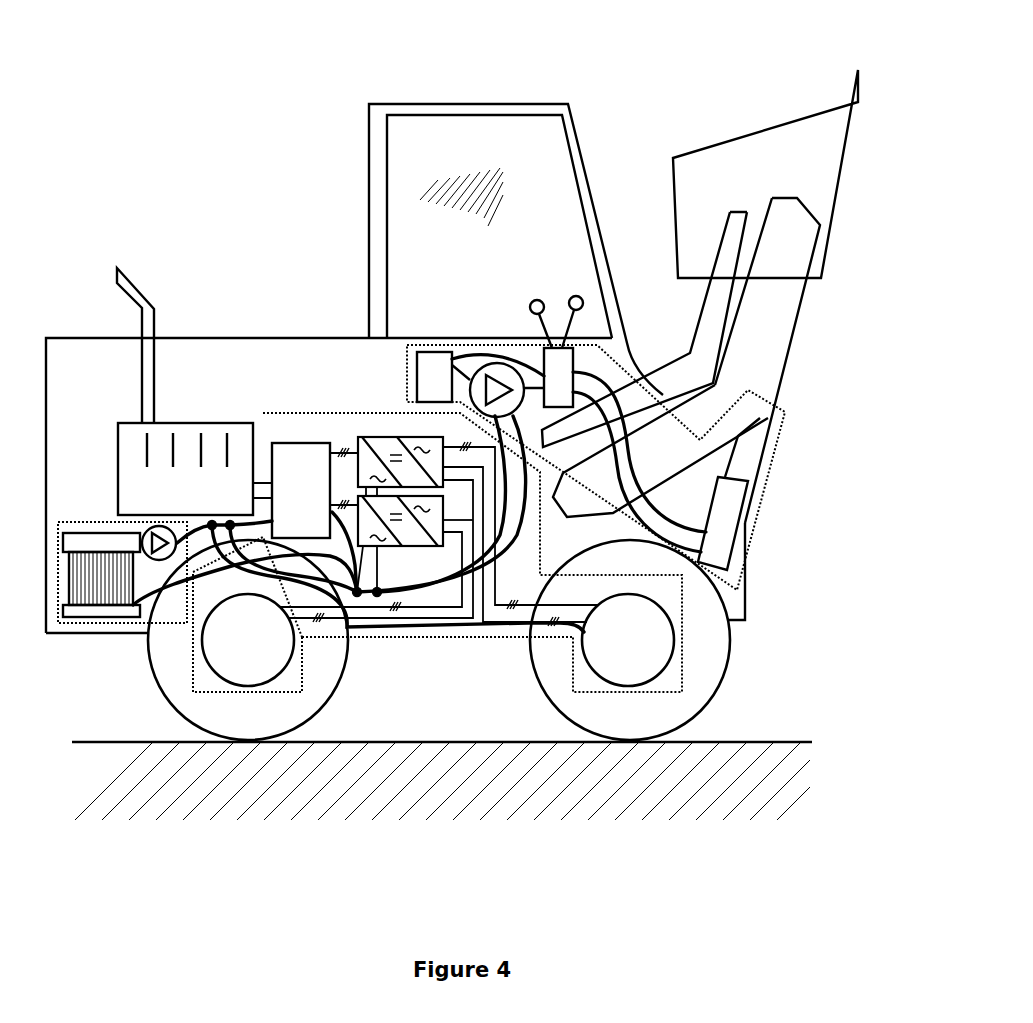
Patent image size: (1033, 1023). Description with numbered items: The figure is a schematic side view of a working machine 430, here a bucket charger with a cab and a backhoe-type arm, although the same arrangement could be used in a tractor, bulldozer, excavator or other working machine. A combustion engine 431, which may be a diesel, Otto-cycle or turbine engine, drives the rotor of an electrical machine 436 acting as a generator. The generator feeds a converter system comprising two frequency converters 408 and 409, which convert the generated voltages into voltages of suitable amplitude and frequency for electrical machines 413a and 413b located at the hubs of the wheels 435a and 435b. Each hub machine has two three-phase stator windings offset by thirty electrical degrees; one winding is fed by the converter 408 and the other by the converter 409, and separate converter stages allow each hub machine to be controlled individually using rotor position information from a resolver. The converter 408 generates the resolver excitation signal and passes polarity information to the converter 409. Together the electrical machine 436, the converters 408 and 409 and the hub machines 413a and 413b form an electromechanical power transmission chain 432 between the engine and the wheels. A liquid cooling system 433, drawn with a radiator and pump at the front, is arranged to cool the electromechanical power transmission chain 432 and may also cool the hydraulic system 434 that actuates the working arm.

The working machine 430 is at (352, 191).
The combustion engine 431 is at (193, 499).
The electromechanical power transmission chain 432 is at (487, 637).
The liquid cooling system 433 is at (100, 623).
The hydraulic system 434 is at (766, 489).
The wheel 435a is at (280, 718).
The wheel 435b is at (658, 724).
The electrical machine 436 is at (320, 530).
The converter 408 is at (380, 437).
The converter 409 is at (385, 547).
The electrical machine 413a is at (272, 662).
The electrical machine 413b is at (658, 667).